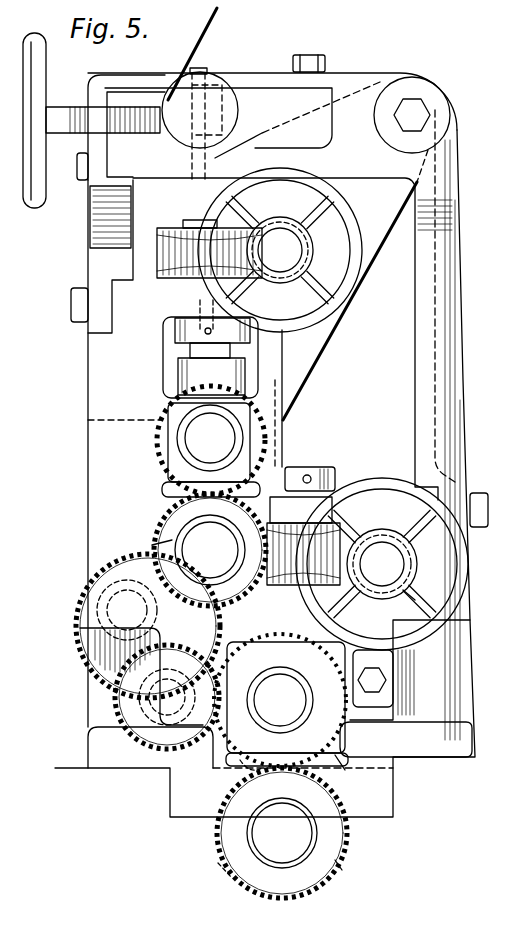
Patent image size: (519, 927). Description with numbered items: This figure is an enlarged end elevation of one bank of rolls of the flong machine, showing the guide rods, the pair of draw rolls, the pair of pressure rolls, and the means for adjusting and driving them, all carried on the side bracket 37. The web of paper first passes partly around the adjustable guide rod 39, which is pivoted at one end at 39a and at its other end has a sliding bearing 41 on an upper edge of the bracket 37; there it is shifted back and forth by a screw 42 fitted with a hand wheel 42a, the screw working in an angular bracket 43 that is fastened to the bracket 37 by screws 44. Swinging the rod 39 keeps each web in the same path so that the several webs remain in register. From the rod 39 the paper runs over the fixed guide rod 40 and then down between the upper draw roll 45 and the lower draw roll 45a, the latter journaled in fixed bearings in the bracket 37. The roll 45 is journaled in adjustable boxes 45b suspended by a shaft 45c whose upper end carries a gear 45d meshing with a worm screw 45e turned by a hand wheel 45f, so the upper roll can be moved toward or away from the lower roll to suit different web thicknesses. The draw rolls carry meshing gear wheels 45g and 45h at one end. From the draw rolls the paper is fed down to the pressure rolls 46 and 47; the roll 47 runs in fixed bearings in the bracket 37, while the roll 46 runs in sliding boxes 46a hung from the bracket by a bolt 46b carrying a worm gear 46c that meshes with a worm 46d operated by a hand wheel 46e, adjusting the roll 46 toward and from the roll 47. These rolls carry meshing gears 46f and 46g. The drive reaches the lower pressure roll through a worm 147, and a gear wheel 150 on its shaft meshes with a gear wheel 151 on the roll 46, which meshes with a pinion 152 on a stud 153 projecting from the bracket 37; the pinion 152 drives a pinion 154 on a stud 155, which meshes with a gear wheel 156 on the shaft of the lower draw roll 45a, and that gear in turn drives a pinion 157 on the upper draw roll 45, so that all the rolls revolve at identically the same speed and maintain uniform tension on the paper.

The bracket 37 is at (462, 318).
The guide rod 39 is at (225, 95).
The pivot 39a is at (200, 70).
The fixed guide rod 40 is at (440, 102).
The sliding bearing 41 is at (160, 150).
The screw 42 is at (145, 105).
The hand wheel 42a is at (36, 40).
The angular bracket 43 is at (112, 85).
The screws 44 is at (322, 62).
The upper draw roll 45 is at (200, 446).
The lower draw roll 45a is at (205, 542).
The adjustable boxes 45b is at (178, 422).
The shaft 45c is at (190, 345).
The gear 45d is at (157, 252).
The worm screw 45e is at (290, 250).
The hand wheel 45f is at (350, 300).
The gear wheel 45g is at (165, 412).
The gear wheel 45h is at (290, 467).
The upper pressure roll 46 is at (345, 748).
The sliding boxes 46a is at (200, 770).
The bolt 46b is at (335, 492).
The worm gear 46c is at (255, 592).
The worm 46d is at (404, 570).
The hand wheel 46e is at (435, 602).
The gear 46f is at (245, 770).
The gear 46g is at (220, 865).
The lower pressure roll 47 is at (330, 858).
The worm 147 is at (305, 845).
The gear wheel 150 is at (335, 878).
The gear wheel 151 is at (338, 770).
The pinion 152 is at (118, 700).
The stud 153 is at (150, 705).
The pinion 154 is at (97, 610).
The stud 155 is at (82, 630).
The gear wheel 156 is at (152, 545).
The pinion 157 is at (88, 420).